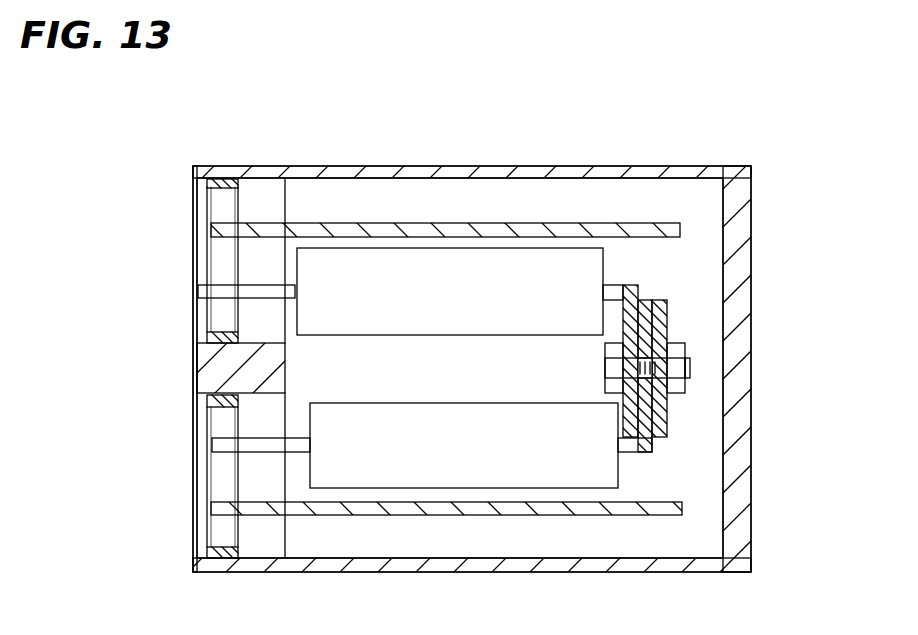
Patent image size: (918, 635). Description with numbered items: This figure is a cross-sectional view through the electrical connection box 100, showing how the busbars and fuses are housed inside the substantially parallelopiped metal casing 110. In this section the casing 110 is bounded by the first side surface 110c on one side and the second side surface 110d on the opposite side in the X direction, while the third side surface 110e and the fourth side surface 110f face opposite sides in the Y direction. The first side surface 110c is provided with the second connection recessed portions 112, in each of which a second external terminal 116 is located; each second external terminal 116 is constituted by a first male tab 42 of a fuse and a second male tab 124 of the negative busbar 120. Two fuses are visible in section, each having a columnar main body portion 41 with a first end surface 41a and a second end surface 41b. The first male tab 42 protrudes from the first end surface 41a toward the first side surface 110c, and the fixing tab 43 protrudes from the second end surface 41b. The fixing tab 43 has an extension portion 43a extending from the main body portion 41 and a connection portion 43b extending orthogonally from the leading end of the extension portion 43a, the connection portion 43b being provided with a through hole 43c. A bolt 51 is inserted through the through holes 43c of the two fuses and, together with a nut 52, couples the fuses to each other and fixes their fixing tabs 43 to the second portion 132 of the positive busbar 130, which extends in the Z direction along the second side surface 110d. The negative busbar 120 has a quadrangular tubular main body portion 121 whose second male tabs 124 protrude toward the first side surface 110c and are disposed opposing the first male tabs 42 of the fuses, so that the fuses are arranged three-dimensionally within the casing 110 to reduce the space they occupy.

The electrical connection box 100 is at (754, 136).
The casing 110 is at (486, 166).
The first side surface 110c is at (194, 569).
The second side surface 110d is at (752, 541).
The third side surface 110e is at (638, 573).
The fourth side surface 110f is at (631, 166).
The second connection recessed portion 112 is at (237, 197).
The second external terminal 116 is at (181, 321).
The negative busbar 120 is at (523, 512).
The main body portion 121 is at (446, 508).
The second male tab 124 is at (211, 232).
The positive busbar 130 is at (711, 379).
The second portion 132 is at (665, 400).
The main body portion 41 is at (458, 403).
The first end surface 41a is at (322, 357).
The second end surface 41b is at (618, 486).
The first male tab 42 is at (199, 292).
The fixing tab 43 is at (812, 240).
The extension portion 43a is at (628, 287).
The connection portion 43b is at (642, 313).
The through hole 43c is at (640, 372).
The bolt 51 is at (607, 353).
The nut 52 is at (690, 350).